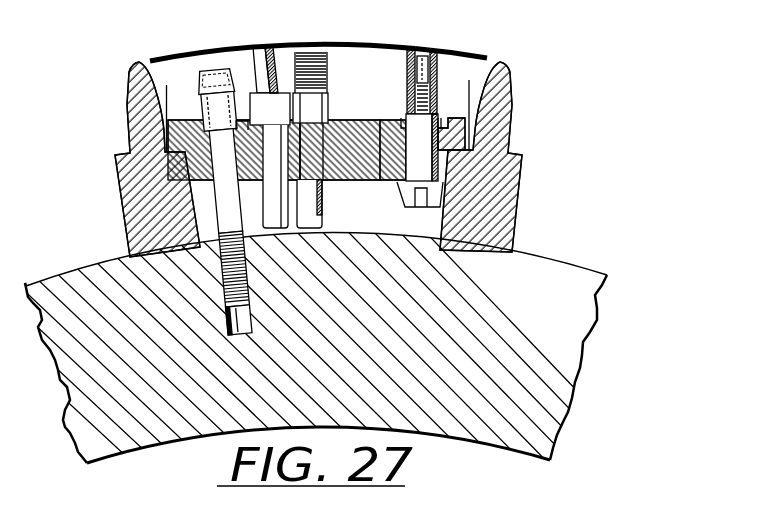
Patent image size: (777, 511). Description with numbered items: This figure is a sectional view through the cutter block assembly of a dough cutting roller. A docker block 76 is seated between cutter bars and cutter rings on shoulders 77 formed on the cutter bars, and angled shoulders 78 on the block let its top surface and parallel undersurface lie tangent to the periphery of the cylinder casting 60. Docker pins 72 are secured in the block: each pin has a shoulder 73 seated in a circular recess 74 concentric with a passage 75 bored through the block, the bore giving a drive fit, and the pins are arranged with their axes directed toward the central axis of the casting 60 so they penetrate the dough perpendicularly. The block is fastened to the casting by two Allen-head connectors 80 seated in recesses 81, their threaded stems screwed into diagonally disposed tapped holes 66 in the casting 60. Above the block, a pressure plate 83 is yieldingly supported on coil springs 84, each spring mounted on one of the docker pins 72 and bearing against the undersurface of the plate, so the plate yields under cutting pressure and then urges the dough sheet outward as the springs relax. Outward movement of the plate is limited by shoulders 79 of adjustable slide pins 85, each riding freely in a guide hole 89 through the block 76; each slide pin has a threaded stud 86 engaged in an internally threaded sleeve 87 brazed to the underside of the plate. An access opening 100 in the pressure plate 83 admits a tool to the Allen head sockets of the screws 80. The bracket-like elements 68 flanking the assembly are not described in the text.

The cylinder casting 60 is at (563, 376).
The tapped holes 66 is at (244, 328).
The bracket 68 is at (133, 83).
The docker pins 72 is at (276, 46).
The shoulder 73 is at (253, 122).
The circular recess 74 is at (242, 118).
The passage 75 is at (259, 178).
The docker block 76 is at (324, 178).
The shoulders 77 is at (317, 109).
The shoulders 78 is at (455, 118).
The shoulders 79 is at (409, 208).
The Allen-head connectors 80 is at (200, 77).
The recesses 81 is at (200, 121).
The pressure plate 83 is at (453, 51).
The coil springs 84 is at (324, 87).
The slide pins 85 is at (418, 127).
The threaded stud 86 is at (417, 82).
The internally threaded sleeve 87 is at (411, 66).
The guide hole 89 is at (387, 173).
The access opening 100 is at (238, 49).